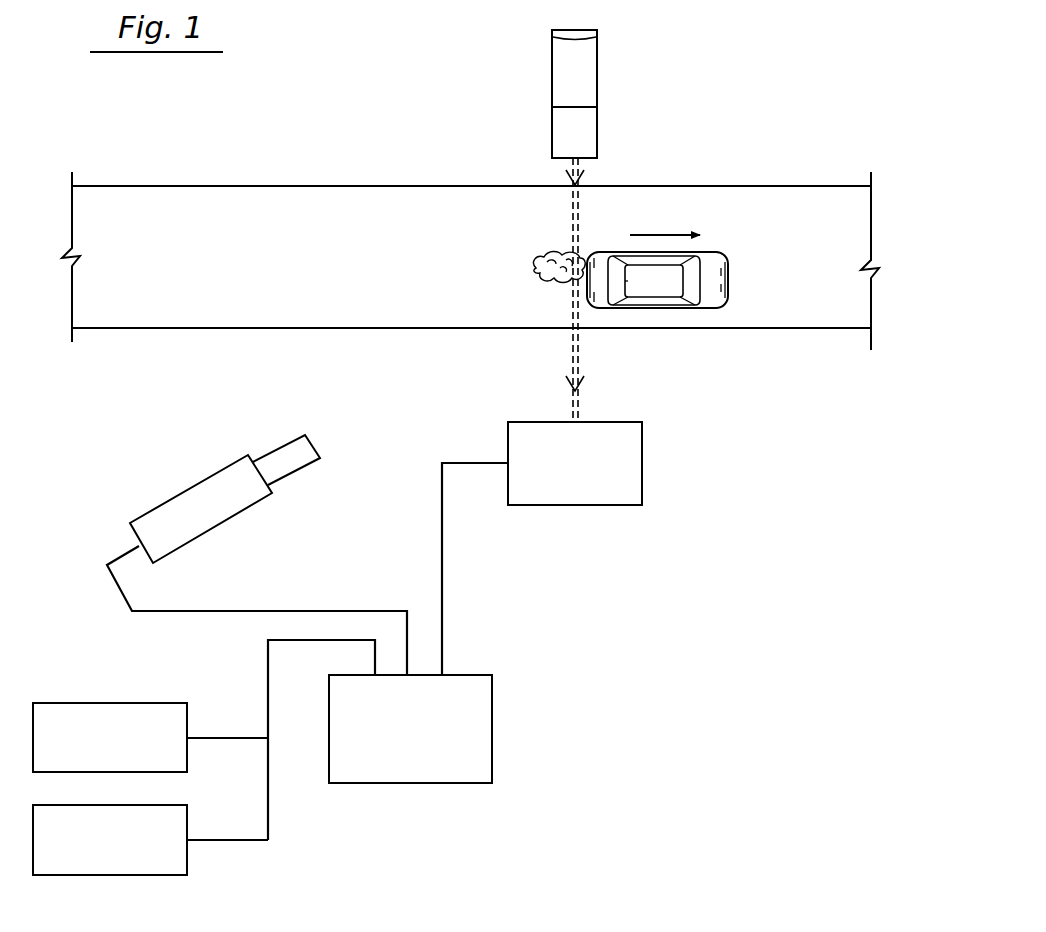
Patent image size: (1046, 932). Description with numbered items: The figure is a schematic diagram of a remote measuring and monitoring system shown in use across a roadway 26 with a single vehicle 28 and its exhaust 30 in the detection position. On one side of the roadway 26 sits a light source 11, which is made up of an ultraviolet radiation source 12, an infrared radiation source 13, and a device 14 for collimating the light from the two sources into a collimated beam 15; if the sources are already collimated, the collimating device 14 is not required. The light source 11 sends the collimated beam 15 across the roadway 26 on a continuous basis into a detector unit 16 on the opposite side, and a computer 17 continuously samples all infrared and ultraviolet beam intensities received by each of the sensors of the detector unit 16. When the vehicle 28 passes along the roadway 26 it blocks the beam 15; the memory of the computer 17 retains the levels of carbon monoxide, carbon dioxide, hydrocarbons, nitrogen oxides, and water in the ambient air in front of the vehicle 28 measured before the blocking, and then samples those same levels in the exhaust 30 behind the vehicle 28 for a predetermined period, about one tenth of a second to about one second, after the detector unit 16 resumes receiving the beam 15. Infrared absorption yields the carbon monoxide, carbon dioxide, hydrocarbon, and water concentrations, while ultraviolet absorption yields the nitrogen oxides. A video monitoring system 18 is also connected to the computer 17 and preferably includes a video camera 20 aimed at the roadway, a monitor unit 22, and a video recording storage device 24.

The light source 11 is at (498, 70).
The ultraviolet radiation source 12 is at (585, 86).
The infrared radiation source 13 is at (578, 140).
The collimating device 14 is at (589, 32).
The collimated beam 15 is at (571, 226).
The detector unit 16 is at (578, 506).
The computer 17 is at (412, 784).
The video monitoring system 18 is at (78, 680).
The video camera 20 is at (176, 492).
The monitor unit 22 is at (128, 703).
The video recording storage device 24 is at (120, 876).
The roadway 26 is at (304, 267).
The vehicle 28 is at (733, 284).
The exhaust 30 is at (532, 264).